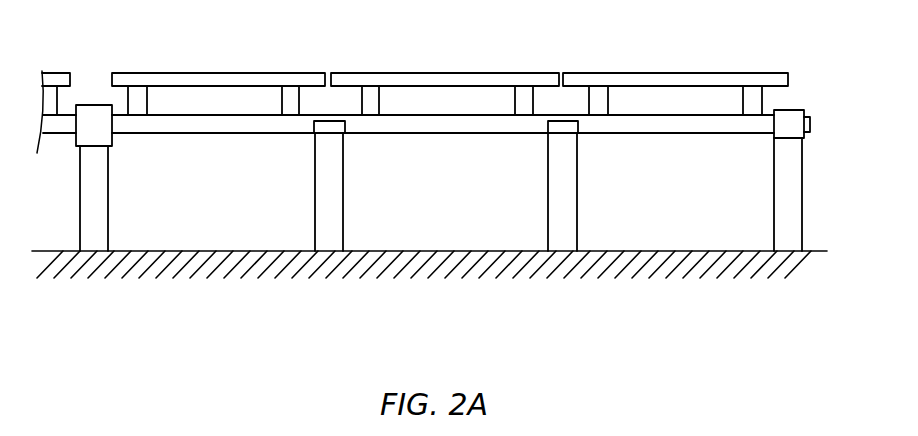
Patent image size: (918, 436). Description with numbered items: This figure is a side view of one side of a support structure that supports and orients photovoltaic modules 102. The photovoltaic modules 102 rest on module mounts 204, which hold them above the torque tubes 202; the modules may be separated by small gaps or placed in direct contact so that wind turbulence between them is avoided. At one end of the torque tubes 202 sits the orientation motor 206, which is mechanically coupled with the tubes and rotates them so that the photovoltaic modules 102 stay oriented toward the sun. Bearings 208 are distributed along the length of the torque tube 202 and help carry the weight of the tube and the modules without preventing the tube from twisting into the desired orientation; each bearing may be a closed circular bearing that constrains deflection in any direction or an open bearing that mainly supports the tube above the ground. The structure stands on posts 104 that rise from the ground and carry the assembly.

The photovoltaic modules 102 is at (287, 73).
The post 104 is at (109, 187).
The torque tubes 202 is at (54, 136).
The module mounts 204 is at (381, 95).
The orientation motor 206 is at (113, 147).
The bearings 208 is at (312, 134).